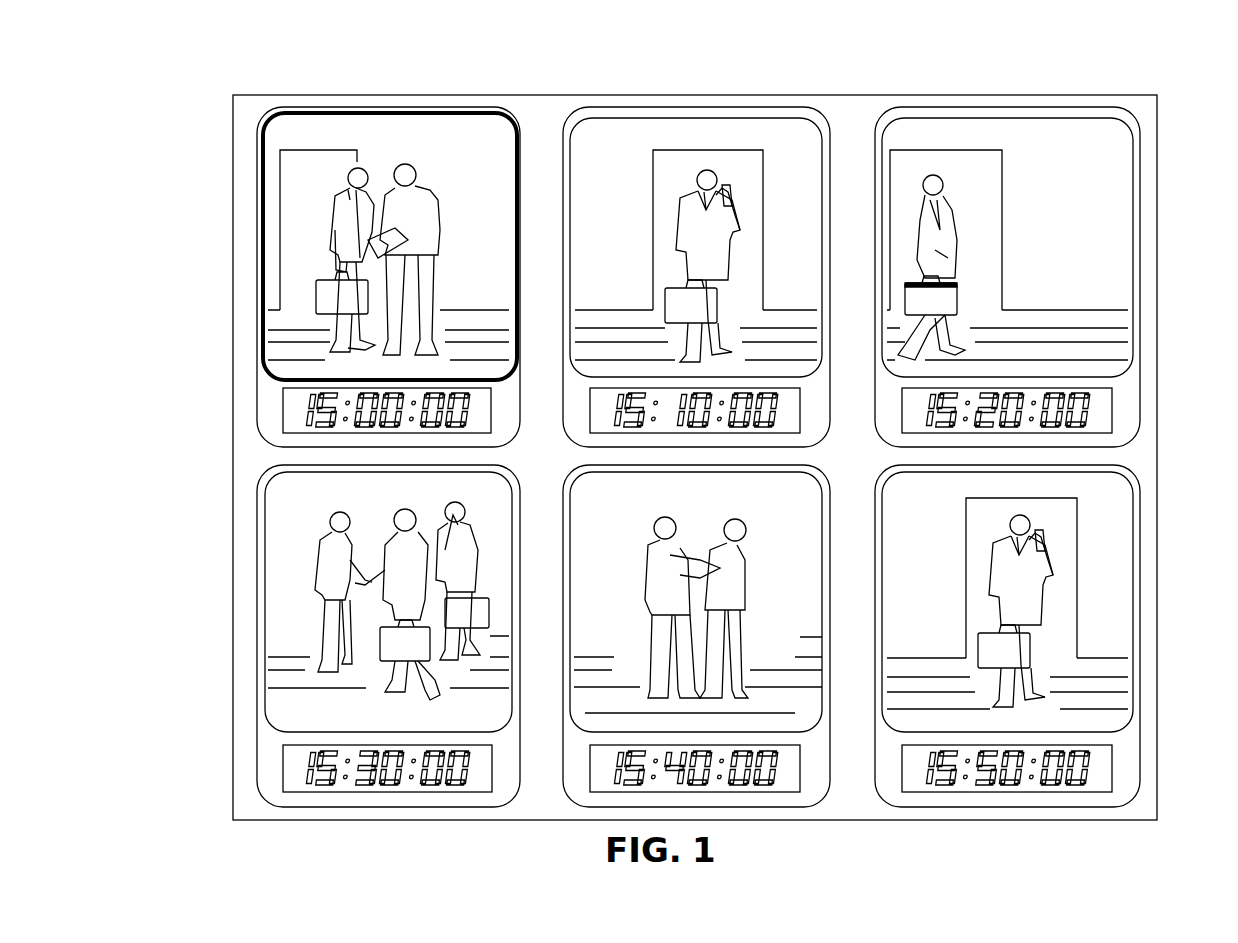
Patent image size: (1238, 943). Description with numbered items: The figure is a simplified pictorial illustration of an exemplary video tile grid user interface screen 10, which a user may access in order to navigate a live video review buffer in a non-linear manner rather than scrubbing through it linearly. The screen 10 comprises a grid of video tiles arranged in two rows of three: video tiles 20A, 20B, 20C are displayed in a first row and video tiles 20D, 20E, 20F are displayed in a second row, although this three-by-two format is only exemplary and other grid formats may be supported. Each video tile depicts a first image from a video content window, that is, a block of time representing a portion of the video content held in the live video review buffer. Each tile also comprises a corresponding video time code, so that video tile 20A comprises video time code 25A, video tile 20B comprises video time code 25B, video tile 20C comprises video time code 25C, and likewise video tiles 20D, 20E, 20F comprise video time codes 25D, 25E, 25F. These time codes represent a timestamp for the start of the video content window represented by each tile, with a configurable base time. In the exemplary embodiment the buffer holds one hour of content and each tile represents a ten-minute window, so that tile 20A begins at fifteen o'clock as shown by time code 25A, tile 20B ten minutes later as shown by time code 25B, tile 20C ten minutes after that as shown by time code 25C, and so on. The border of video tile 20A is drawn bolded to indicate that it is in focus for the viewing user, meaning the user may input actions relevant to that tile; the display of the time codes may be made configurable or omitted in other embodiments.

The video tile grid user interface screen 10 is at (1157, 165).
The video tile 20A is at (403, 118).
The video tile 20B is at (721, 118).
The video tile 20C is at (1041, 118).
The video tile 20D is at (262, 630).
The video tile 20E is at (570, 668).
The video tile 20F is at (883, 662).
The video time code 25A is at (283, 410).
The video time code 25B is at (590, 402).
The video time code 25C is at (902, 402).
The video time code 25D is at (283, 770).
The video time code 25E is at (590, 770).
The video time code 25F is at (902, 772).